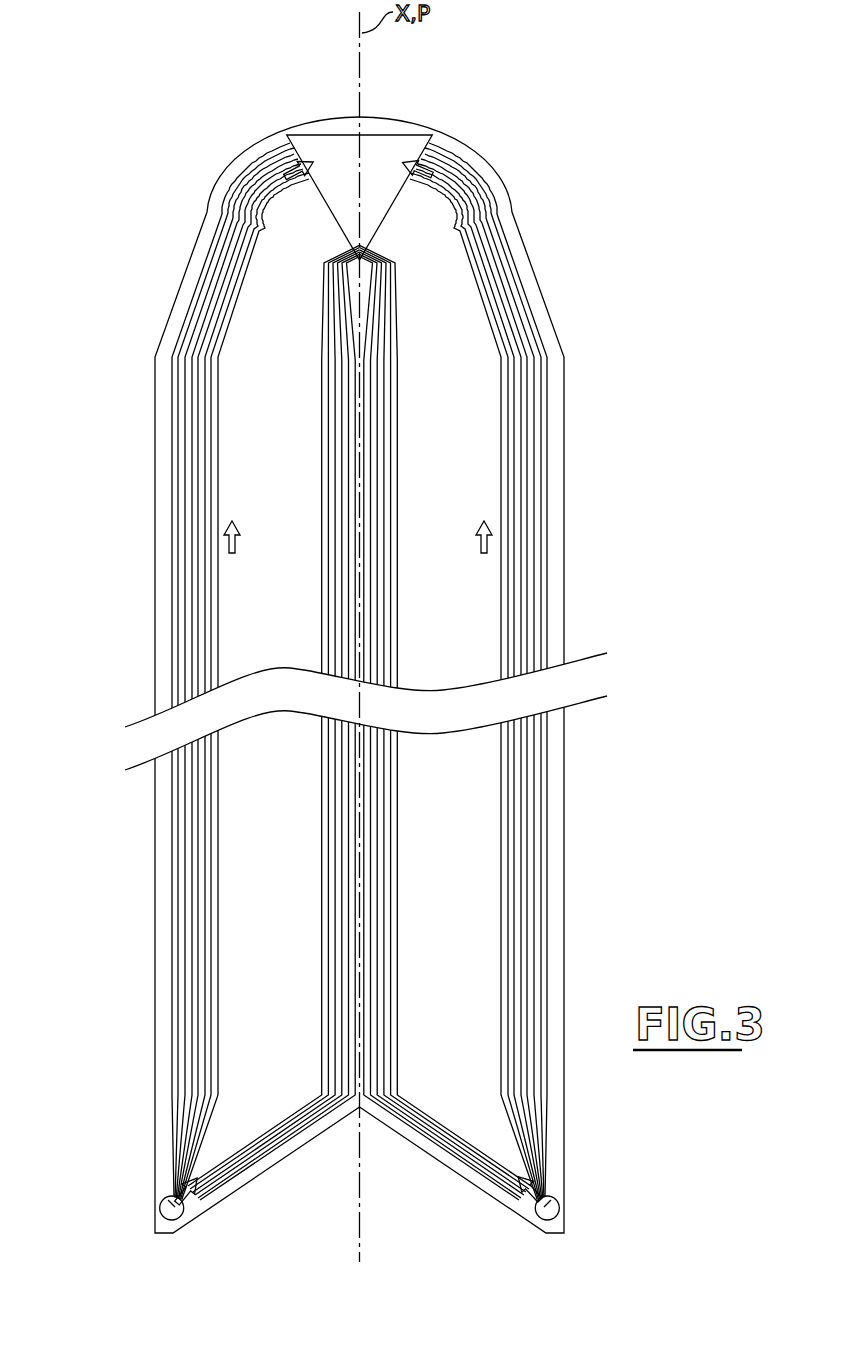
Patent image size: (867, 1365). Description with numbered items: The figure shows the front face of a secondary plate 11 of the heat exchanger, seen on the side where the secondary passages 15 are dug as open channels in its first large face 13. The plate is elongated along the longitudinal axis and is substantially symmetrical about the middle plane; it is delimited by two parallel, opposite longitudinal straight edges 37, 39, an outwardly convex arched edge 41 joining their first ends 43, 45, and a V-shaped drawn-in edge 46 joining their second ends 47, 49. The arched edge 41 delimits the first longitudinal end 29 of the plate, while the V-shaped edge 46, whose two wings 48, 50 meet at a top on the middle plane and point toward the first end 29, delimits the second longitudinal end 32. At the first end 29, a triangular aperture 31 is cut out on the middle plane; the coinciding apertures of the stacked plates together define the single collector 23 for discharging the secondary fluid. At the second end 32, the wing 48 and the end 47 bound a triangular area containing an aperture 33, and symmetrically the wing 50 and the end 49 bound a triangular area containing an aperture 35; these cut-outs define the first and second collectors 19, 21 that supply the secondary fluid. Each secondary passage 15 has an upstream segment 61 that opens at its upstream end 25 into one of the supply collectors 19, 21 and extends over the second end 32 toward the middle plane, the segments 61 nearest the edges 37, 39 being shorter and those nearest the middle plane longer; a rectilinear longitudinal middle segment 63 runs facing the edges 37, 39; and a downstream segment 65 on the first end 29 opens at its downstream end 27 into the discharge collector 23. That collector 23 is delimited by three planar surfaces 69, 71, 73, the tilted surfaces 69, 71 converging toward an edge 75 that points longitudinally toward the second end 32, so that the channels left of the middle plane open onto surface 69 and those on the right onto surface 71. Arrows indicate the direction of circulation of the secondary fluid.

The secondary plate 11 is at (583, 545).
The first large face 13 is at (450, 313).
The secondary passages 15 is at (507, 742).
The first collector 19 is at (153, 1200).
The second collector 21 is at (560, 1207).
The single collector 23 is at (310, 157).
The upstream ends 25 is at (163, 1213).
The downstream ends 27 is at (247, 193).
The first longitudinal end 29 is at (490, 137).
The triangular aperture 31 is at (360, 197).
The second longitudinal end 32 is at (570, 1157).
The aperture 33 is at (160, 1212).
The aperture 35 is at (558, 1223).
The longitudinal straight edge 37 is at (153, 920).
The longitudinal straight edge 39 is at (563, 635).
The arched edge 41 is at (250, 133).
The first end 43 is at (155, 402).
The first end 45 is at (563, 380).
The V-shaped drawn-in edge 46 is at (337, 1140).
The second end 47 is at (155, 1233).
The wing 48 is at (257, 1177).
The second end 49 is at (563, 1223).
The wing 50 is at (432, 1157).
The upstream segment 61 is at (205, 1142).
The middle segment 63 is at (370, 895).
The downstream segment 65 is at (480, 183).
The planar surface 69 is at (318, 175).
The planar surface 71 is at (396, 165).
The planar surface 73 is at (338, 145).
The edge 75 is at (352, 215).